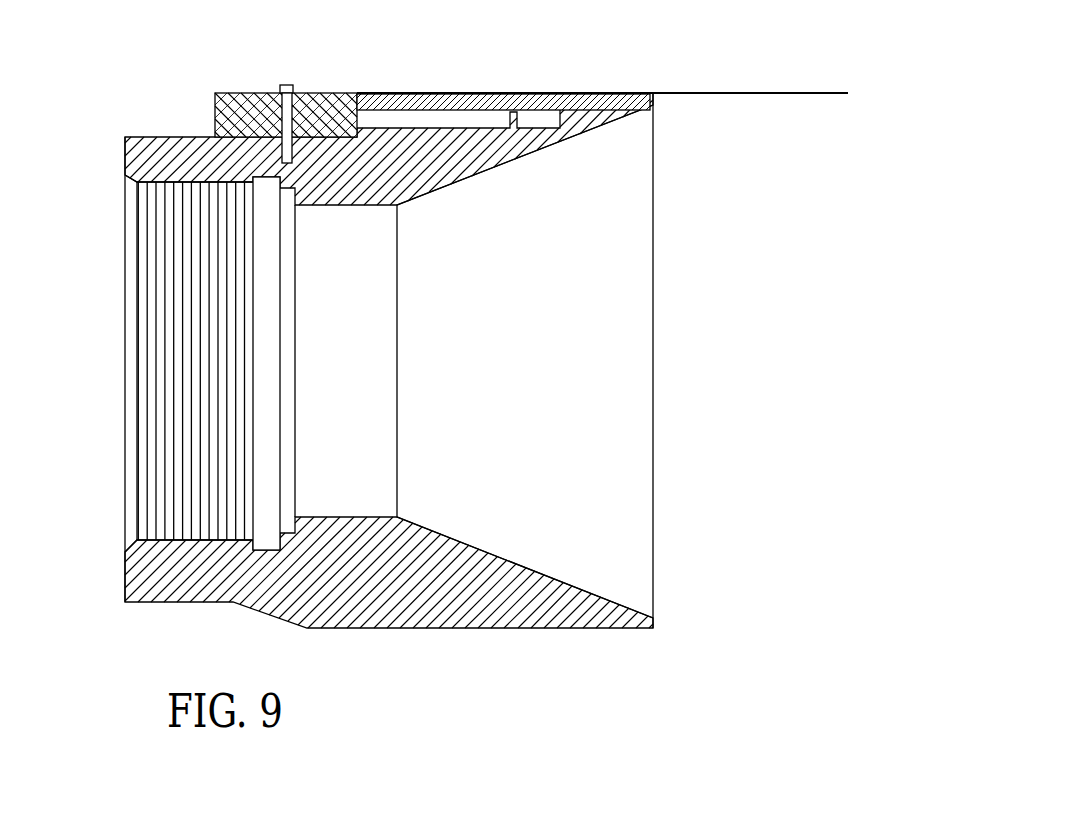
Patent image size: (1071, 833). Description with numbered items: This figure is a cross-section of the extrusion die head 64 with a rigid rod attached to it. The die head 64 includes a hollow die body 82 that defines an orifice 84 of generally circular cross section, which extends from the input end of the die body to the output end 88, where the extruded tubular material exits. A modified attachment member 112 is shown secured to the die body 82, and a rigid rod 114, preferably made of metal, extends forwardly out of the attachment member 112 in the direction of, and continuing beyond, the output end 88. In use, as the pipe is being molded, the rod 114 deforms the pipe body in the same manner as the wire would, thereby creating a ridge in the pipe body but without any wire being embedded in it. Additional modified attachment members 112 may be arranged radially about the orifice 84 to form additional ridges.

The extrusion die head 64 is at (118, 138).
The hollow die body 82 is at (490, 612).
The orifice 84 is at (605, 337).
The output end 88 is at (662, 193).
The modified attachment member 112 is at (227, 70).
The rigid rod 114 is at (705, 92).